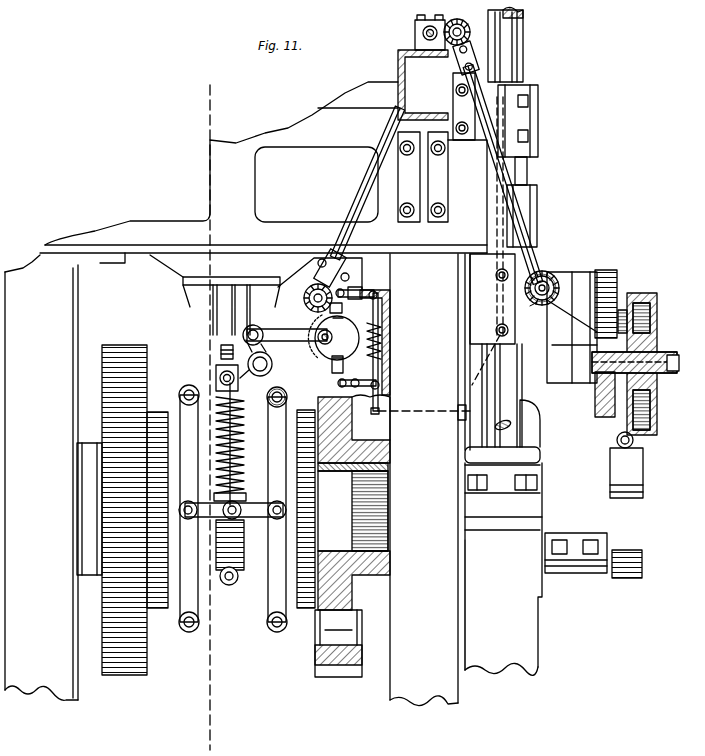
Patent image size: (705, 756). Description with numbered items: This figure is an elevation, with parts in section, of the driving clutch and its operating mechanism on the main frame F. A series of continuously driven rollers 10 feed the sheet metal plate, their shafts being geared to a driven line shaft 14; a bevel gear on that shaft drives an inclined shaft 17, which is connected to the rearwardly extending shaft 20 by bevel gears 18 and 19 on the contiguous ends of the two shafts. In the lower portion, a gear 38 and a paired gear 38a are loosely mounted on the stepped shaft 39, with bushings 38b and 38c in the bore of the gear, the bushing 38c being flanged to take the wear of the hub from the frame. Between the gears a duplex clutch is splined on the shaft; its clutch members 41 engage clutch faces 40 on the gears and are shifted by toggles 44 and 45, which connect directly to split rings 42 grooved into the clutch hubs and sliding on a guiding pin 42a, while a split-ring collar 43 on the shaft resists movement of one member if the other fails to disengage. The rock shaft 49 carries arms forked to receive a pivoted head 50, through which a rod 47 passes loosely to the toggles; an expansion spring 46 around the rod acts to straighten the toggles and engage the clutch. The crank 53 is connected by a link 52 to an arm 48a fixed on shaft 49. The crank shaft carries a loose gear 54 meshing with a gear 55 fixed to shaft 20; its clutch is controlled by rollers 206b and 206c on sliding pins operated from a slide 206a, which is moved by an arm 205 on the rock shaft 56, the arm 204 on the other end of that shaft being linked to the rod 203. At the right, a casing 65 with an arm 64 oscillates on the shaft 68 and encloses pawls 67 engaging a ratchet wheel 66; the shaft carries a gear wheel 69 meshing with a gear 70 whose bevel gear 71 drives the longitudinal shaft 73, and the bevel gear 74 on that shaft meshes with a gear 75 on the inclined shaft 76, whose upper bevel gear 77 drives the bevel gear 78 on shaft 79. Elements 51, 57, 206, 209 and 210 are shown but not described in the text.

The feed rollers 10 is at (204, 100).
The line shaft 14 is at (422, 32).
The inclined shaft 17 is at (356, 206).
The bevel gear 18 is at (318, 282).
The bevel gear 19 is at (312, 308).
The shaft 20 is at (304, 299).
The gear 38 is at (333, 673).
The gear 38a is at (137, 678).
The bushing 38b is at (345, 552).
The flanged bushing 38c is at (370, 480).
The shaft 39 is at (645, 498).
The clutch faces 40 is at (155, 610).
The clutch members 41 is at (152, 405).
The split rings 42 is at (200, 622).
The guiding pin 42a is at (282, 390).
The collar 43 is at (230, 585).
The toggle 44 is at (224, 519).
The toggle 45 is at (273, 519).
The expansion spring 46 is at (222, 437).
The rod 47 is at (220, 386).
The arm 48a is at (271, 330).
The rock shaft 49 is at (270, 362).
The pivoted head 50 is at (216, 370).
The lock nut 51 is at (222, 355).
The link 52 is at (285, 335).
The crank 53 is at (337, 338).
The gear 54 is at (326, 370).
The gear 55 is at (316, 316).
The rock shaft 56 is at (418, 414).
The bearing block 57 is at (628, 579).
The arm 64 is at (626, 310).
The casing 65 is at (650, 295).
The ratchet wheel 66 is at (651, 318).
The pawls 67 is at (652, 418).
The shaft 68 is at (664, 360).
The gear wheel 69 is at (597, 420).
The gear 70 is at (606, 272).
The bevel gear 71 is at (567, 274).
The longitudinal shaft 73 is at (527, 292).
The bevel gear 74 is at (531, 302).
The bevel gear 75 is at (558, 270).
The inclined shaft 76 is at (530, 228).
The bevel gear 77 is at (498, 38).
The bevel gear 78 is at (458, 20).
The shaft 79 is at (452, 62).
The rod 203 is at (482, 368).
The arm 204 is at (495, 425).
The arm 205 is at (376, 414).
The rod 206 is at (380, 395).
The slide 206a is at (360, 312).
The roller 206b is at (377, 293).
The roller 206c is at (383, 356).
The frame post 209 is at (543, 594).
The frame post 210 is at (530, 640).
The main frame F is at (246, 394).